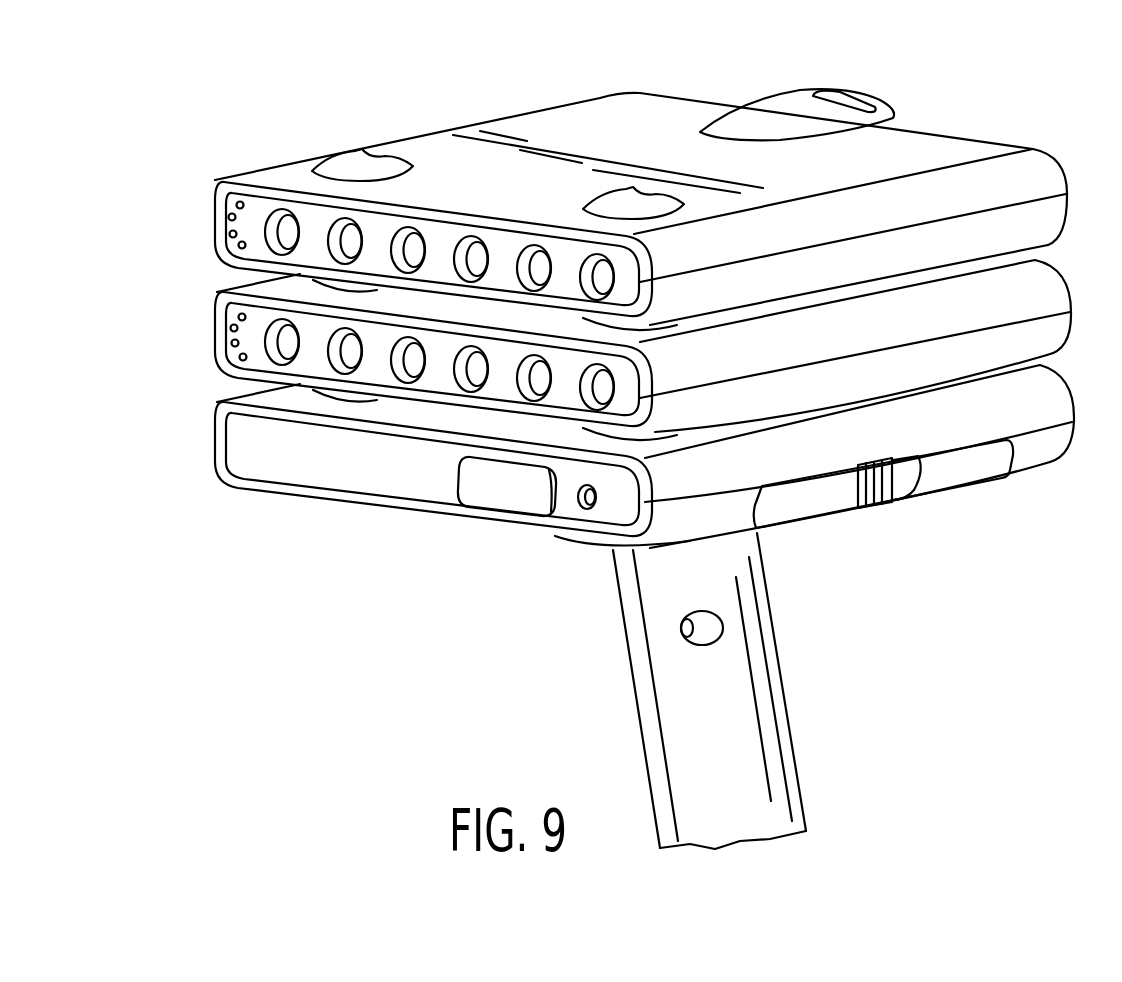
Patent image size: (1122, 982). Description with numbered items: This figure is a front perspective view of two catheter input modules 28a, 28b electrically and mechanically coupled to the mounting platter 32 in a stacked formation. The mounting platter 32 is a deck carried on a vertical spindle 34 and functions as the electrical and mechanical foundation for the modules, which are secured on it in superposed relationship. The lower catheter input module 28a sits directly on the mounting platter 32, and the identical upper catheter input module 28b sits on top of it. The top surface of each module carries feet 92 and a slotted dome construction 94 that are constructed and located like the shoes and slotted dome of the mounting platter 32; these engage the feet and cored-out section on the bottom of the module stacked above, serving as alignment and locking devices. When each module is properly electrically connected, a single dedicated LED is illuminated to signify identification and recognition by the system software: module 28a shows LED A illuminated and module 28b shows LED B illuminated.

The catheter input module 28b is at (1063, 177).
The catheter input module 28a is at (1068, 298).
The feet 92 is at (362, 165).
The slotted dome construction 94 is at (793, 110).
The mounting platter 32 is at (1072, 410).
The vertical spindle 34 is at (788, 730).
The LED A is at (242, 360).
The LED B is at (233, 236).